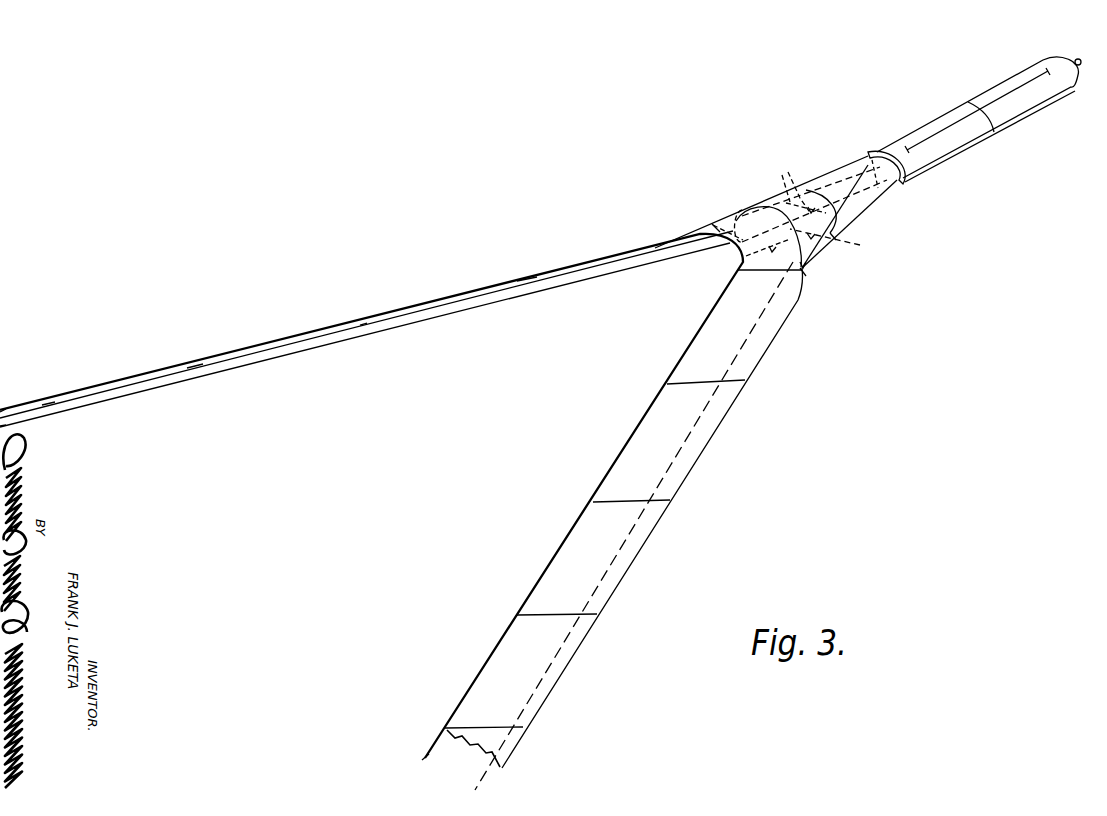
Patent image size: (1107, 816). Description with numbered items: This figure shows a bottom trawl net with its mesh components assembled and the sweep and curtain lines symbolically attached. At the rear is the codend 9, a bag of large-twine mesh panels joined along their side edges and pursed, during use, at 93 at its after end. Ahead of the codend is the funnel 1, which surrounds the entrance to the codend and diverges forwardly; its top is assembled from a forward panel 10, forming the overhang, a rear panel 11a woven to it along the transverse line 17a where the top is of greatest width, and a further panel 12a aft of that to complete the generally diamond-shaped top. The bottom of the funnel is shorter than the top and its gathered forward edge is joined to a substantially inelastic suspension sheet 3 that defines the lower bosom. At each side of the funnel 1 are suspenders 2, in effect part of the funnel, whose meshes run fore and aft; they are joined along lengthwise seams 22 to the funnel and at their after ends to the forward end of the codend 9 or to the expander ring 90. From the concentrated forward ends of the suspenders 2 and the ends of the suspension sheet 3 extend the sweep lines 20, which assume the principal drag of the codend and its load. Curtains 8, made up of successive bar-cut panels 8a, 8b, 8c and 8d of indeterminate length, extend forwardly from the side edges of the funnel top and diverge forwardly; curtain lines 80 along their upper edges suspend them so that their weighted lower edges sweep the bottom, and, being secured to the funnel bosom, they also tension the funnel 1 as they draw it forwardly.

The funnel 1 is at (771, 185).
The suspender 2 is at (750, 218).
The suspension sheet 3 is at (738, 266).
The curtain 8 is at (431, 289).
The rearmost curtain panel 8a is at (706, 351).
The curtain panel 8b is at (631, 467).
The curtain panel 8c is at (557, 585).
The curtain panel 8d is at (487, 694).
The codend 9 is at (961, 91).
The forward top panel 10 is at (717, 226).
The rear top panel 11a is at (806, 240).
The top panel 12a is at (840, 188).
The transverse line 17a is at (804, 273).
The sweep line 20 is at (312, 340).
The lengthwise seam 22 is at (827, 205).
The curtain line 80 is at (13, 408).
The expander ring 90 is at (868, 150).
The pursed end 93 is at (1078, 59).